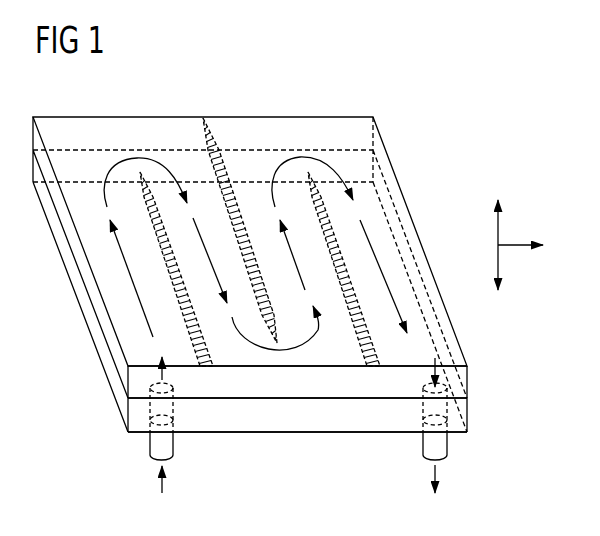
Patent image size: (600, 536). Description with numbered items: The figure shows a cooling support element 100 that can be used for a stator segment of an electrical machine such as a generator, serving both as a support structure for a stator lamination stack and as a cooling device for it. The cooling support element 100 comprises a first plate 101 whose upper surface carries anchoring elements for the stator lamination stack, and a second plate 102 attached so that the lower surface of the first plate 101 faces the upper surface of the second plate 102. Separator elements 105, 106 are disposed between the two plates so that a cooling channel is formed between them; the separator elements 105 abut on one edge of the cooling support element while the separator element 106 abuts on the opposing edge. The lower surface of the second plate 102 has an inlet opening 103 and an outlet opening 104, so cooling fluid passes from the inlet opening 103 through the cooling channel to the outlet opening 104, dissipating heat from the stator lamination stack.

The cooling support element 100 is at (462, 141).
The first plate 101 is at (468, 378).
The second plate 102 is at (468, 412).
The inlet opening 103 is at (167, 446).
The outlet opening 104 is at (428, 443).
The separator element 105 is at (140, 186).
The separator element 106 is at (216, 160).